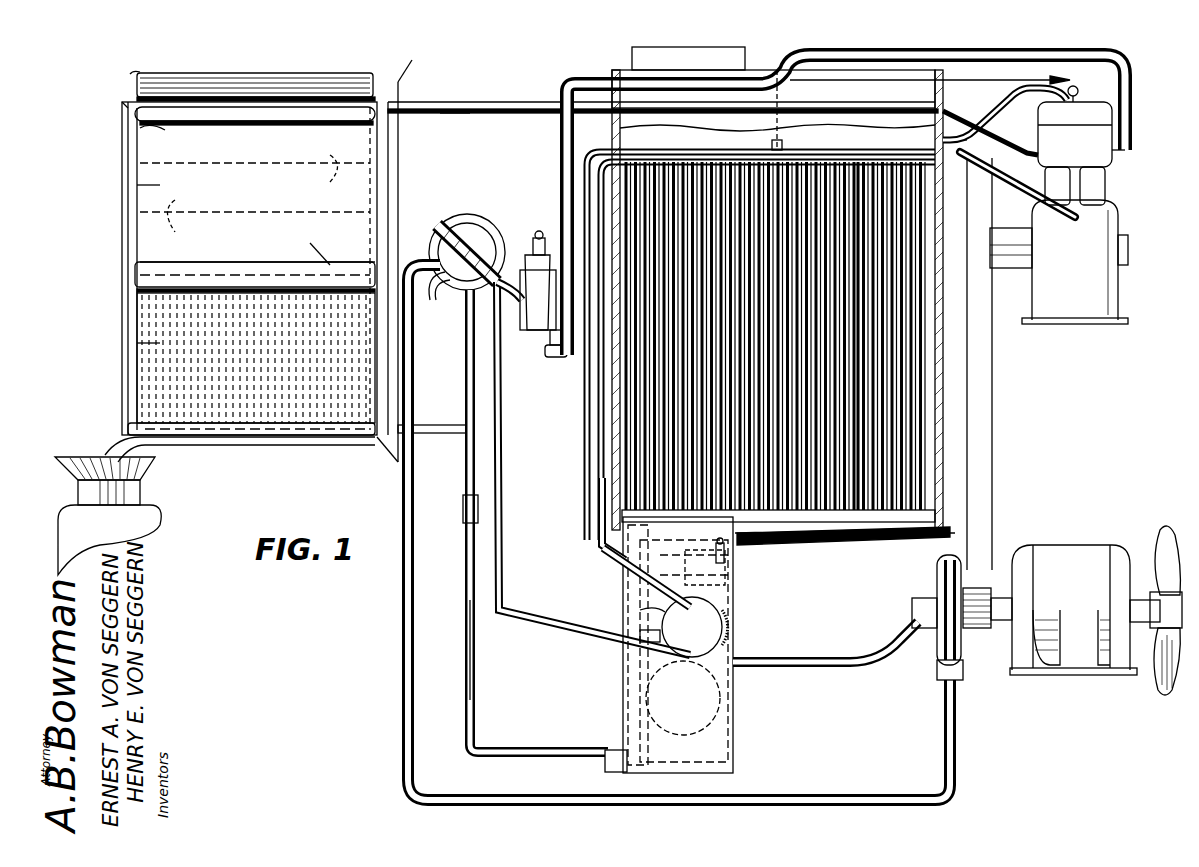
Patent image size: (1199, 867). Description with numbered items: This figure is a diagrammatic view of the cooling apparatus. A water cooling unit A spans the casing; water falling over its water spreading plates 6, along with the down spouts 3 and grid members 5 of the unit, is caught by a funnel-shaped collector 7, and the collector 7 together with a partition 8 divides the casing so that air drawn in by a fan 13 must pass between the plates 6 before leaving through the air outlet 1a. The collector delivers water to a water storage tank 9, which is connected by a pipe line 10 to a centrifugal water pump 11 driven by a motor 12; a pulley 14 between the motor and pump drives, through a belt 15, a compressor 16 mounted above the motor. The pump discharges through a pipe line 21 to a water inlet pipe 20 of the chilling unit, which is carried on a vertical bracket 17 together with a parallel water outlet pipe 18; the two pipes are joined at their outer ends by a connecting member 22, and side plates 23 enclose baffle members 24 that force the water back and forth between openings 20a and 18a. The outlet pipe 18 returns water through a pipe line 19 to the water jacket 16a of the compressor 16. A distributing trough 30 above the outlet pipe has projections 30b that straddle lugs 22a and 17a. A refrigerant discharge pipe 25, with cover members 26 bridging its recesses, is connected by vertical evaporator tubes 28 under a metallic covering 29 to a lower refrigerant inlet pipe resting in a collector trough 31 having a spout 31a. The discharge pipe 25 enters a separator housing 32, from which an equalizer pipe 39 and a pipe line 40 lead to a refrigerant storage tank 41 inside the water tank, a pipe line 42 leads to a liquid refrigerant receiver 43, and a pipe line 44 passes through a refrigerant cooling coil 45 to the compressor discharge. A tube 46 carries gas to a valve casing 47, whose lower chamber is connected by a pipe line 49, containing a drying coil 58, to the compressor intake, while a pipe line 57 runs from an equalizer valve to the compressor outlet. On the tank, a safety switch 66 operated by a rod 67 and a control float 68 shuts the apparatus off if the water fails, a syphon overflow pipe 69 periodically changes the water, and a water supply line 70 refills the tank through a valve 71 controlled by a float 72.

The air outlet 1a is at (640, 62).
The down spouts 3 is at (625, 492).
The grid members 5 is at (538, 210).
The water spreading plates 6 is at (880, 395).
The collector 7 is at (182, 55).
The partition 8 is at (600, 85).
The water storage tank 9 is at (723, 630).
The pipe line 10 is at (800, 655).
The water pump 11 is at (918, 595).
The motor 12 is at (1100, 525).
The fan 13 is at (1165, 530).
The pulley 14 is at (990, 590).
The belt 15 is at (990, 470).
The compressor 16 is at (1075, 318).
The water jacket 16a is at (1120, 152).
The bracket 17 is at (405, 148).
The lug 17a is at (388, 82).
The water outlet pipe 18 is at (250, 122).
The opening 18a is at (140, 130).
The pipe line 19 is at (450, 118).
The water inlet pipe 20 is at (245, 262).
The opening 20a is at (320, 265).
The pipe line 21 is at (405, 690).
The connecting member 22 is at (140, 160).
The lug 22a is at (122, 102).
The side plates 23 is at (155, 185).
The baffle members 24 is at (275, 168).
The refrigerant discharge pipe 25 is at (435, 270).
The cover members 26 is at (150, 272).
The evaporator tubes 28 is at (140, 340).
The covering 29 is at (160, 343).
The distributing trough 30 is at (268, 78).
The projections 30b is at (140, 85).
The collector trough 31 is at (262, 437).
The spout 31a is at (108, 450).
The separator housing 32 is at (478, 222).
The equalizer pipe 39 is at (468, 385).
The pipe line 40 is at (478, 688).
The storage tank 41 is at (660, 705).
The pipe line 42 is at (503, 512).
The liquid refrigerant receiver 43 is at (640, 610).
The pipe line 44 is at (615, 432).
The refrigerant cooling coil 45 is at (1005, 98).
The tube 46 is at (538, 245).
The valve casing 47 is at (535, 330).
The pipe line 49 is at (1030, 186).
The pipe line 57 is at (1005, 85).
The drying coil 58 is at (825, 150).
The safety switch 66 is at (618, 533).
The rod 67 is at (640, 590).
The control float 68 is at (640, 635).
The syphon overflow pipe 69 is at (640, 680).
The water supply line 70 is at (810, 540).
The valve 71 is at (738, 560).
The float 72 is at (735, 588).
The water cooling unit A is at (910, 432).